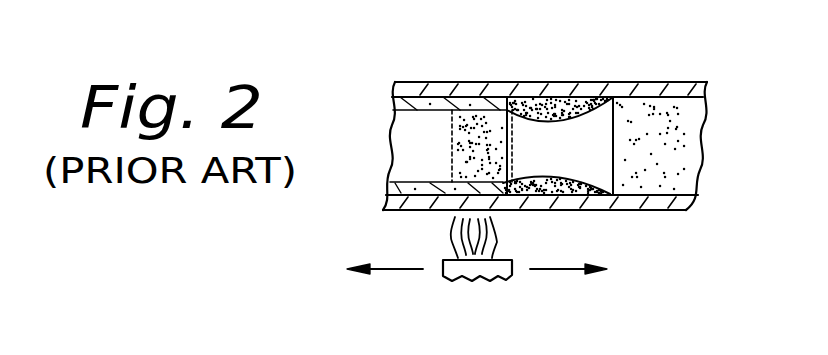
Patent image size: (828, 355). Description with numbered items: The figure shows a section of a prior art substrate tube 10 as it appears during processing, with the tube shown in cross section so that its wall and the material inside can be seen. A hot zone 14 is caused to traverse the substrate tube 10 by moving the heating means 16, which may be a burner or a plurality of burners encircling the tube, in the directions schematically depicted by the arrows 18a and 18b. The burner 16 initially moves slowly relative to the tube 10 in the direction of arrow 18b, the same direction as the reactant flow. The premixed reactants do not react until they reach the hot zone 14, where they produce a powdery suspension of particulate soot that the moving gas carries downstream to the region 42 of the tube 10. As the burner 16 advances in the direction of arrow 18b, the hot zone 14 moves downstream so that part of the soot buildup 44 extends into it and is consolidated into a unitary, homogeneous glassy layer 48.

The substrate tube 10 is at (690, 82).
The hot zone 14 is at (470, 120).
The heating means 16 is at (477, 283).
The arrow 18a is at (390, 271).
The arrow 18b is at (560, 271).
The region 42 is at (645, 128).
The soot buildup 44 is at (552, 104).
The glassy layer 48 is at (390, 165).